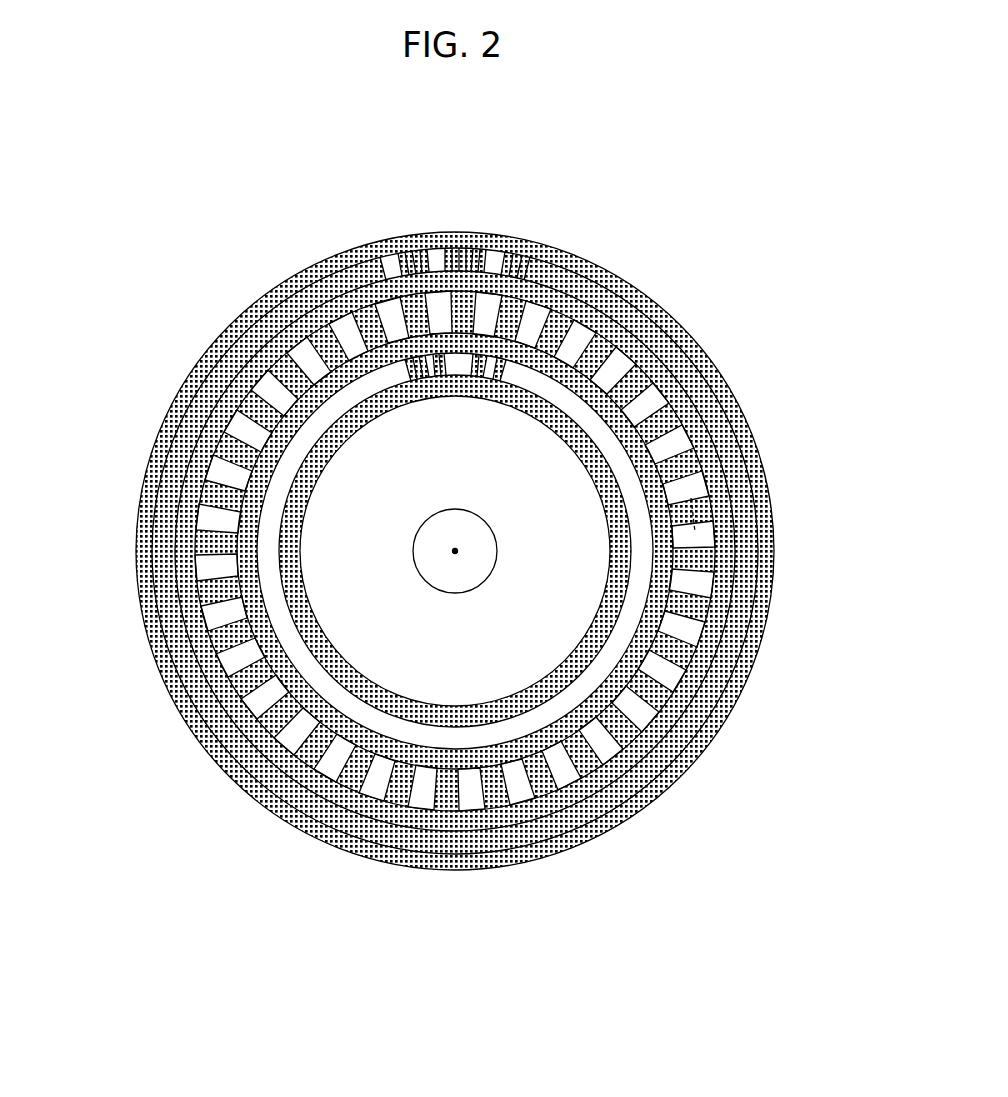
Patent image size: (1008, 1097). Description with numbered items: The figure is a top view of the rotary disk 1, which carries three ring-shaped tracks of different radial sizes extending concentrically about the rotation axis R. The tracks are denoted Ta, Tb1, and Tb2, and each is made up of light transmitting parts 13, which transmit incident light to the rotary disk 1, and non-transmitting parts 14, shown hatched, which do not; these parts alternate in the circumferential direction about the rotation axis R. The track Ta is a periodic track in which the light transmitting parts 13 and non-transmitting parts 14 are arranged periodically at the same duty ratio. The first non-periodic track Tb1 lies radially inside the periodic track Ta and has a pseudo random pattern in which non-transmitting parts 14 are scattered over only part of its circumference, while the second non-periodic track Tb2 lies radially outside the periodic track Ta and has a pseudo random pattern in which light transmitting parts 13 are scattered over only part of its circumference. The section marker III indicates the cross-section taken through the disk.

The rotary disk 1 is at (118, 148).
The light transmitting parts 13 is at (530, 253).
The non-transmitting parts 14 is at (598, 283).
The rotation axis R is at (683, 382).
The section line III- III is at (690, 545).
The periodic track Ta is at (692, 590).
The first non-periodic track Tb1 is at (638, 590).
The second non-periodic track Tb2 is at (743, 590).